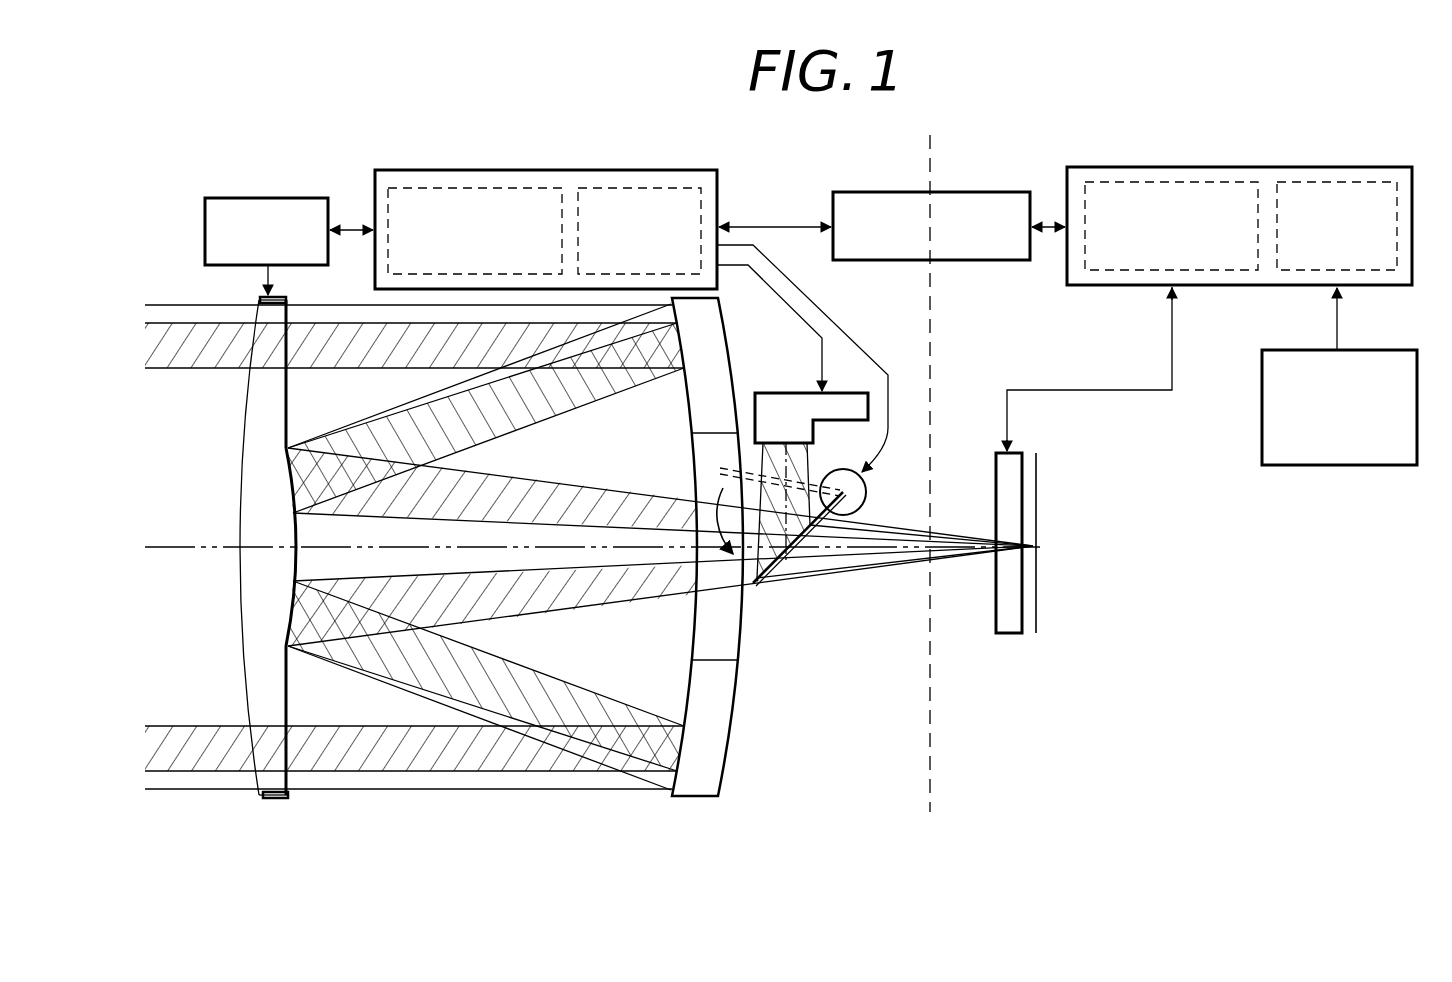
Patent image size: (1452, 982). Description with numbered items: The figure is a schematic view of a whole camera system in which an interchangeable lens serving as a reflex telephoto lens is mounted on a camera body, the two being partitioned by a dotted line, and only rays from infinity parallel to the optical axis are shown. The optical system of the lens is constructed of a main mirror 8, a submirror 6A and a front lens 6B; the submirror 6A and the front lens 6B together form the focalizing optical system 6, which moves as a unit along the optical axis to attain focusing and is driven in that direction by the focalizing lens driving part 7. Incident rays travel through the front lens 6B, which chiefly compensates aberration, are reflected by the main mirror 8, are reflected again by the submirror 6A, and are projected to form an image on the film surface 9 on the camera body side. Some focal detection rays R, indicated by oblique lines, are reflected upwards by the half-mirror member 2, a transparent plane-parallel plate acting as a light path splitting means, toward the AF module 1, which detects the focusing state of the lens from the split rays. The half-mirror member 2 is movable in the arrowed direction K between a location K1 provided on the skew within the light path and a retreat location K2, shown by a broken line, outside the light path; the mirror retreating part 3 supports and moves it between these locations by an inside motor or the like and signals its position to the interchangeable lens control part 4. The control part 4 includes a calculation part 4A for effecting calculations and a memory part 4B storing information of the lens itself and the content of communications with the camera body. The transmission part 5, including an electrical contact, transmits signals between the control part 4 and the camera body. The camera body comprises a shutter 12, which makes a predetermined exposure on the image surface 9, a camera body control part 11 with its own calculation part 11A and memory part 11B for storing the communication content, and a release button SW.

The AF module 1 is at (781, 393).
The half-mirror member 2 is at (798, 563).
The mirror retreating part 3 is at (866, 492).
The interchangeable lens control part 4 is at (603, 214).
The calculation part 4A is at (537, 188).
The memory part 4B is at (683, 188).
The transmission part 5 is at (1011, 192).
The focalizing optical system 6 is at (296, 595).
The submirror 6A is at (297, 562).
The front lens 6B is at (276, 797).
The focalizing lens driving part 7 is at (306, 198).
The main mirror 8 is at (706, 797).
The film surface (image surface) 9 is at (1036, 633).
The camera body control part 11 is at (1239, 224).
The calculation part 11A is at (1100, 270).
The memory part 11B is at (1289, 270).
The shutter 12 is at (1018, 454).
The arrowed direction K is at (716, 493).
The skewed location K1 is at (758, 587).
The retreat location K2 is at (723, 468).
The focal detection rays R is at (192, 370).
The release button SW is at (1390, 466).